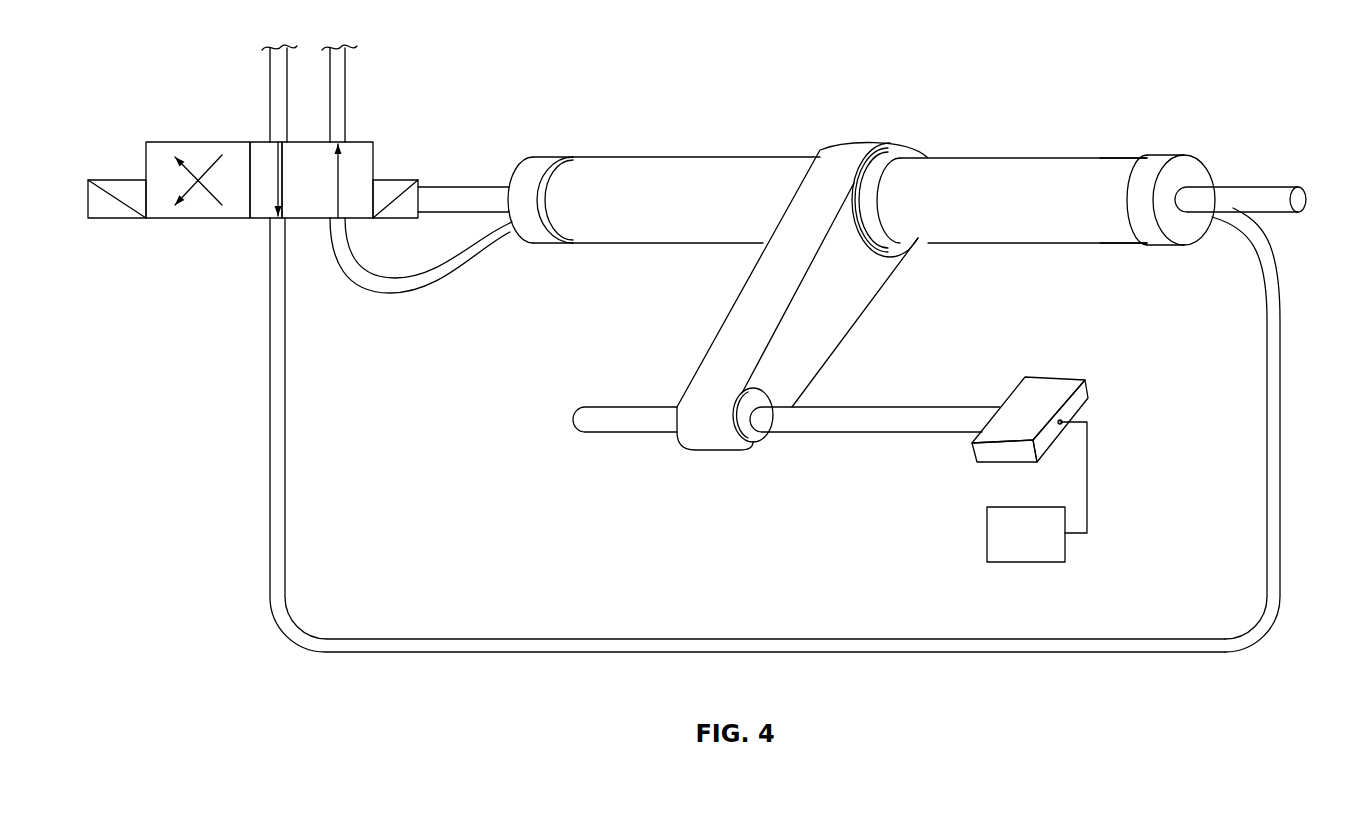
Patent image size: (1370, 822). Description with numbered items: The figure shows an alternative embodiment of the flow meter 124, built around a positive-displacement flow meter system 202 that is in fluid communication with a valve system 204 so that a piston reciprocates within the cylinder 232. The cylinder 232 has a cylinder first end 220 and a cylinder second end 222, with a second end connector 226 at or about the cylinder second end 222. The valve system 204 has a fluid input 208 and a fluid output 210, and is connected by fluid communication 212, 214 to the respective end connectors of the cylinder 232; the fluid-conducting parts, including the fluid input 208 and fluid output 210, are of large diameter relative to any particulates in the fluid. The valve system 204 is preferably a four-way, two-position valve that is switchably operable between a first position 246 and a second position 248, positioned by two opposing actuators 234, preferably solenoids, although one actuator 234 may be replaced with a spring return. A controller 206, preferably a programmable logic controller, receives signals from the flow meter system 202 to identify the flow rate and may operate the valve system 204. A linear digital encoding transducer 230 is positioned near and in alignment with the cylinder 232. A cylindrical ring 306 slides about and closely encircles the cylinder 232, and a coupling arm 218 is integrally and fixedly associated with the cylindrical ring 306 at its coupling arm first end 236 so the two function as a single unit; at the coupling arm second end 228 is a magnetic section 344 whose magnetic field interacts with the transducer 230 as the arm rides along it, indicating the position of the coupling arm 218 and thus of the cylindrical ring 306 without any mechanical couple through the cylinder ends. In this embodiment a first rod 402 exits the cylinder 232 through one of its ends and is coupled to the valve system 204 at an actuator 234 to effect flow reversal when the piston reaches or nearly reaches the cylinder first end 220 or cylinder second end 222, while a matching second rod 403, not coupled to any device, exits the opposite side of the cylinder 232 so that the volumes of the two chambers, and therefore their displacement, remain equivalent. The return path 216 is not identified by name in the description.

The positive-displacement flow meter system 202 is at (1093, 100).
The valve system 204 is at (147, 83).
The controller 206 is at (1040, 562).
The fluid input 208 is at (268, 78).
The fluid output 210 is at (347, 78).
The fluid communication 212 is at (389, 298).
The fluid communication 214 is at (1282, 527).
The conduit 216 is at (284, 527).
The coupling arm 218 is at (757, 296).
The cylinder first end 220 is at (590, 157).
The cylinder second end 222 is at (1115, 160).
The second end connector 226 is at (1190, 165).
The coupling arm second end 228 is at (706, 376).
The linear digital encoding transducer 230 is at (1050, 385).
The cylinder 232 is at (990, 158).
The actuator 234 is at (117, 180).
The coupling arm first end 236 is at (852, 148).
The first position 246 is at (358, 142).
The second position 248 is at (197, 142).
The cylindrical ring 306 is at (918, 150).
The magnetic section 344 is at (750, 440).
The first rod 402 is at (443, 187).
The second rod 403 is at (1240, 190).
The flow meter 124 is at (562, 157).